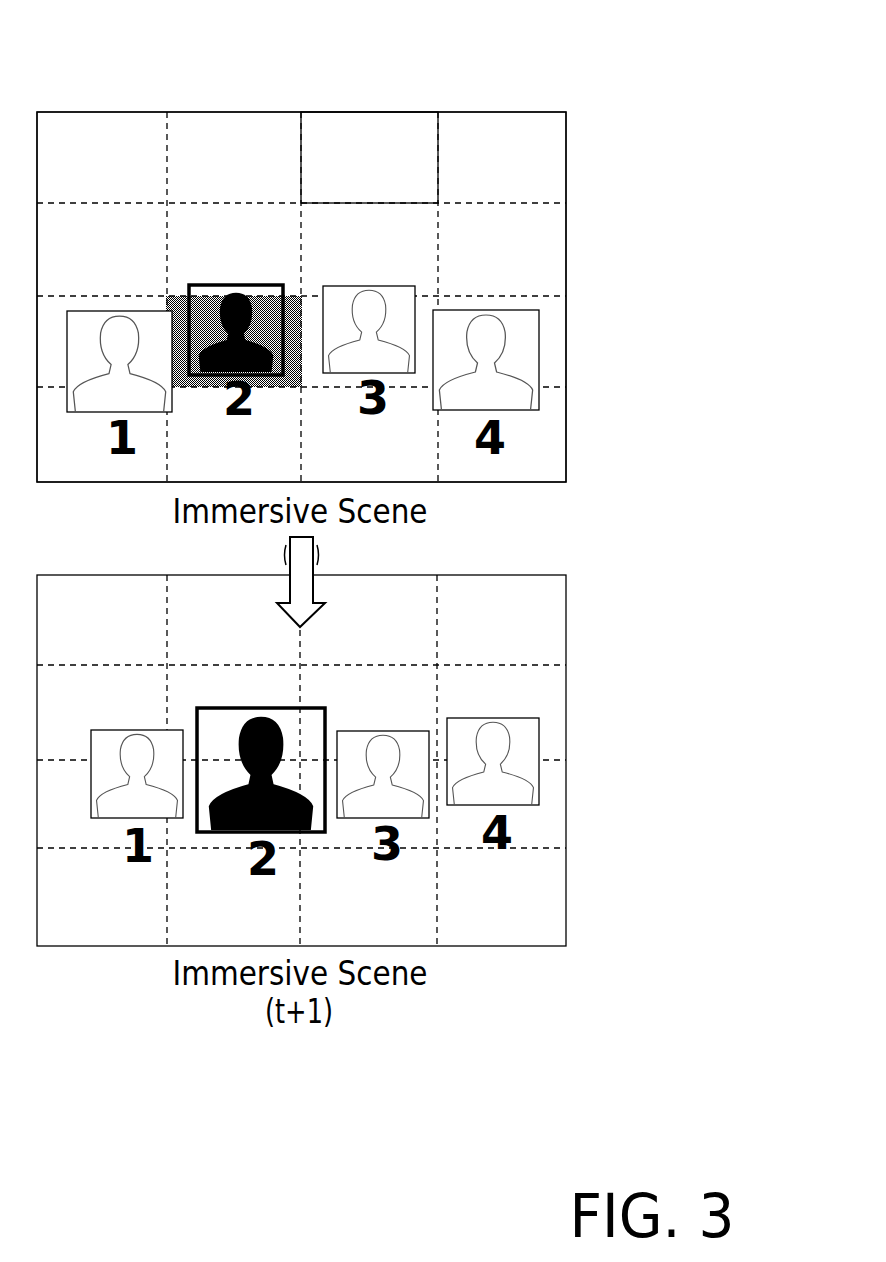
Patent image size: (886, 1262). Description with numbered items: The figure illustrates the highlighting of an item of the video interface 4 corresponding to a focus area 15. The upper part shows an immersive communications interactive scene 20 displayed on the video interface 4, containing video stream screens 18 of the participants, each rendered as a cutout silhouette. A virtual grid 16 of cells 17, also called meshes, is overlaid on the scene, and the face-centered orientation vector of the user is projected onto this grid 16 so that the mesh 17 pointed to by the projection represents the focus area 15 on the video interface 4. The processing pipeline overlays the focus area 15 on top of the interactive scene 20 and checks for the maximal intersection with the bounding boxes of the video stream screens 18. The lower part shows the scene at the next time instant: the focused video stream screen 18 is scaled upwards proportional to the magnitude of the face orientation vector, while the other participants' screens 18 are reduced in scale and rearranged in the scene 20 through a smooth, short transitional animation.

The video interface 4 is at (575, 105).
The interactive scene 20 is at (515, 114).
The cell 17 is at (457, 235).
The virtual grid 16 is at (373, 200).
The focus area 15 is at (290, 317).
The video stream screen 18 is at (120, 311).